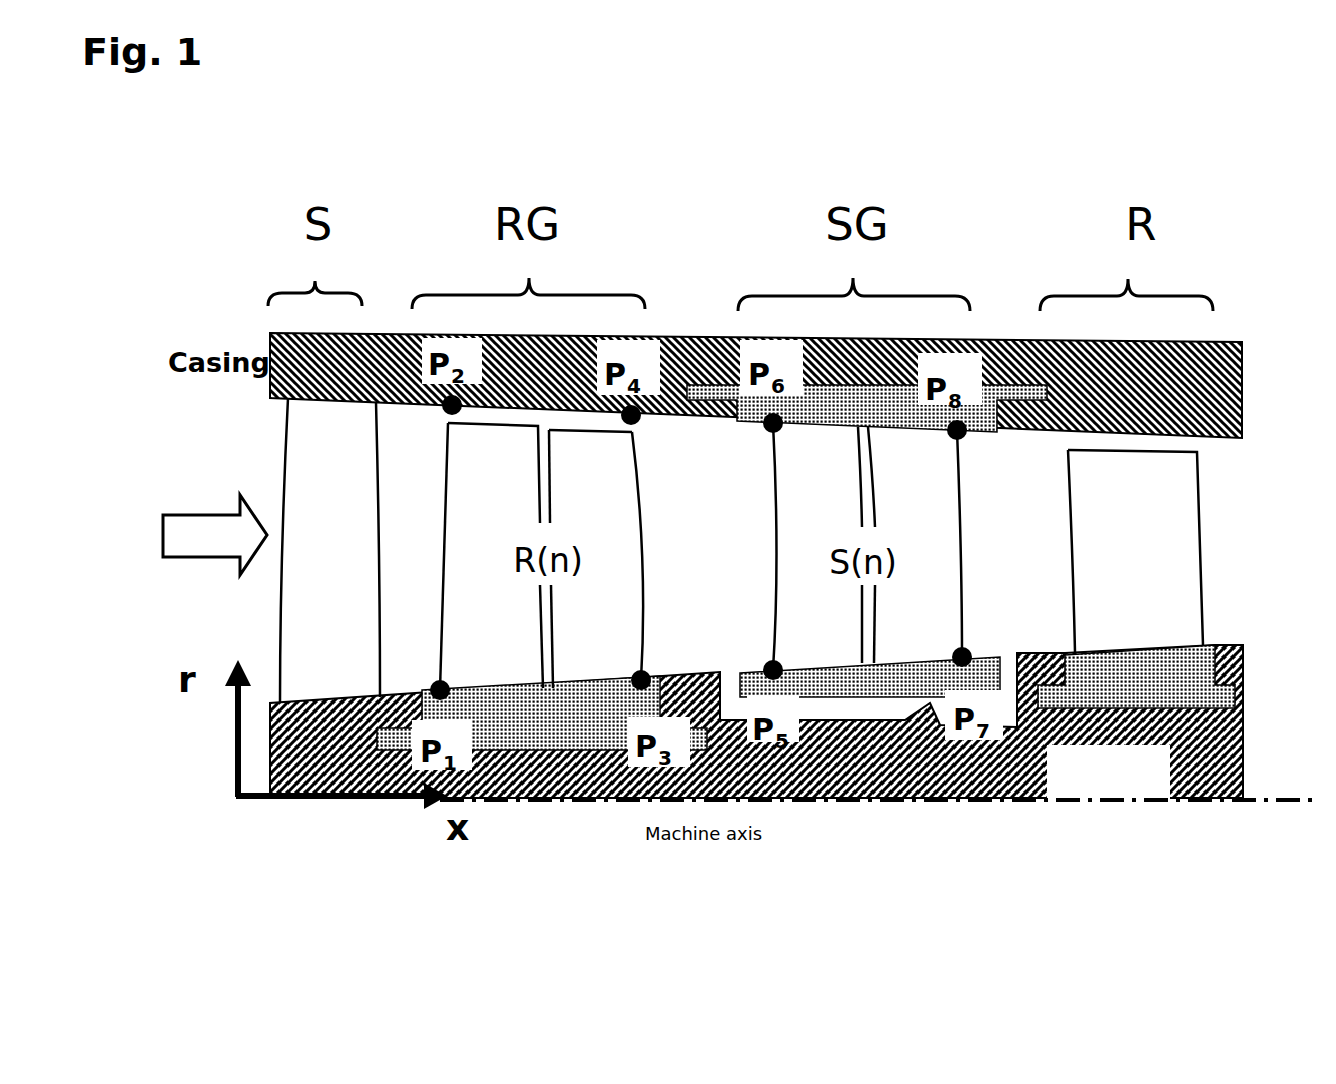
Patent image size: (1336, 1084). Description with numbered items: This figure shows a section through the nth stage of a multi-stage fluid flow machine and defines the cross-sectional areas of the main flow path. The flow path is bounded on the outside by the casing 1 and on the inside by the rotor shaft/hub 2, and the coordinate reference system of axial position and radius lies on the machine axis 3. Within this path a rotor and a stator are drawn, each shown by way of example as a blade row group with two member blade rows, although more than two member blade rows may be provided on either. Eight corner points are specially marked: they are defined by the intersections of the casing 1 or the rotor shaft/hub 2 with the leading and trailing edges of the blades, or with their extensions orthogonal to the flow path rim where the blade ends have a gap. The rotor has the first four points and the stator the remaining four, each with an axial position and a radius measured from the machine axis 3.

The casing 1 is at (1218, 393).
The rotor shaft/hub 2 is at (1222, 751).
The machine axis 3 is at (820, 804).